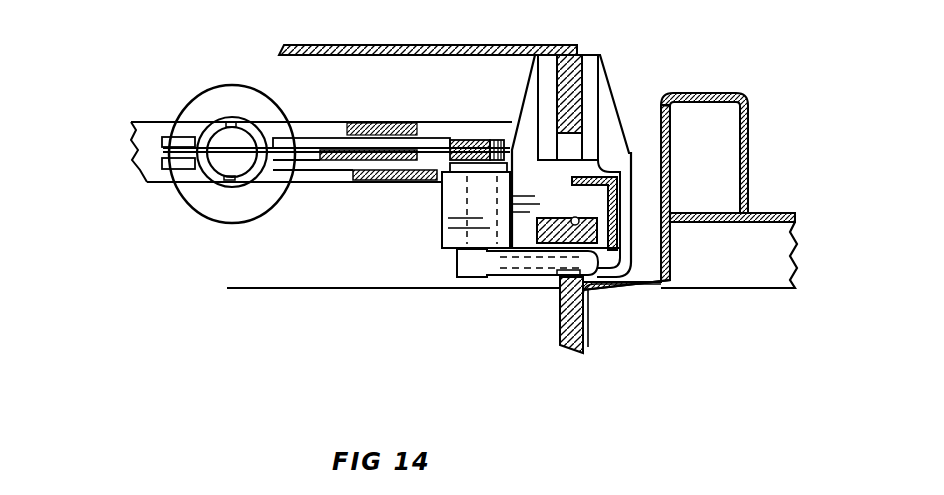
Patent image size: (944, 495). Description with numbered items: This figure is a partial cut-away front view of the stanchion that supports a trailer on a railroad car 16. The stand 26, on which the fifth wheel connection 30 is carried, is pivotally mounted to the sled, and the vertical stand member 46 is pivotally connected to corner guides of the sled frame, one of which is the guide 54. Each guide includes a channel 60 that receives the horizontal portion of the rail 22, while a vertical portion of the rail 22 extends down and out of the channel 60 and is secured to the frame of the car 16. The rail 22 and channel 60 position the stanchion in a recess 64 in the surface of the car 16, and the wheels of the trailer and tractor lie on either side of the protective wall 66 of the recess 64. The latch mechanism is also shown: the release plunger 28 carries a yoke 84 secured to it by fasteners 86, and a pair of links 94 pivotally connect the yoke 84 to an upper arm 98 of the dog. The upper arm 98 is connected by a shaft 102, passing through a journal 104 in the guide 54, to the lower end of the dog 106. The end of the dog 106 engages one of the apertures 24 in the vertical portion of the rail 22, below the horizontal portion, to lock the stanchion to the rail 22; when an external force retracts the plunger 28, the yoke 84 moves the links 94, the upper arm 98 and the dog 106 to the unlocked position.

The railroad car 16 is at (248, 330).
The rail 22 is at (560, 328).
The apertures 24 is at (560, 268).
The stand 26 is at (608, 203).
The plunger 28 is at (283, 104).
The fifth wheel connection 30 is at (456, 44).
The vertical stand member 46 is at (572, 86).
The guide 54 is at (618, 155).
The channel 60 is at (573, 218).
The recess 64 is at (650, 143).
The protective wall 66 is at (727, 118).
The yoke 84 is at (301, 150).
The fasteners 86 is at (233, 121).
The links 94 is at (407, 139).
The upper arm 98 is at (453, 153).
The shaft 102 is at (470, 155).
The journal 104 is at (441, 250).
The dog 106 is at (508, 267).